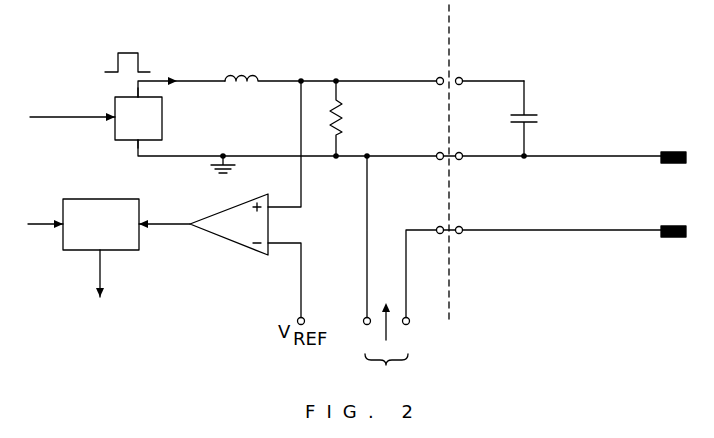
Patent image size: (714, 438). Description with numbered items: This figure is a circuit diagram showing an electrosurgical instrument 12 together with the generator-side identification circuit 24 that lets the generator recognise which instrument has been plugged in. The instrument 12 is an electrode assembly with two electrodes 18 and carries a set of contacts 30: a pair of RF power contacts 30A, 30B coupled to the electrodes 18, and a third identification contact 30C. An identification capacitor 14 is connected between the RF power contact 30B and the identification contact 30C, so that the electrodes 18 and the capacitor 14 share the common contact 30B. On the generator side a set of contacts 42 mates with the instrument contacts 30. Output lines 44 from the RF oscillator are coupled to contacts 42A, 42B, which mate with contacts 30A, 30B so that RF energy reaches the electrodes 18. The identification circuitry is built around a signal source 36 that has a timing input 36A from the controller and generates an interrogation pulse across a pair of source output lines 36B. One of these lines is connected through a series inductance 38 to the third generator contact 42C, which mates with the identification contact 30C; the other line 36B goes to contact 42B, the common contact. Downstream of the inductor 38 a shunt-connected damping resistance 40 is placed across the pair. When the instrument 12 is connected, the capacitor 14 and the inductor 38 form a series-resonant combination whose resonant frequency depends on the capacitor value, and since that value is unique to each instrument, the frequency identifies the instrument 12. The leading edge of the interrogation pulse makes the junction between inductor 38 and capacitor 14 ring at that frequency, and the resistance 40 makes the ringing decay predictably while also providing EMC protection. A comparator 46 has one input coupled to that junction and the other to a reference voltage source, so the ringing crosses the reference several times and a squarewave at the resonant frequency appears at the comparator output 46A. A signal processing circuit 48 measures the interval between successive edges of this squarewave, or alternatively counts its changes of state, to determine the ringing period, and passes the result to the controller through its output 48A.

The electrosurgical instrument 12 is at (586, 69).
The identification capacitor 14 is at (538, 119).
The electrodes 18 is at (674, 226).
The identification circuit 24 is at (211, 50).
The set of contacts 30 is at (477, 150).
The RF power contact 30A is at (461, 234).
The RF power contact 30B is at (461, 160).
The identification contact 30C is at (461, 85).
The signal source 36 is at (162, 117).
The timing input 36A is at (52, 117).
The source output lines 36B is at (138, 87).
The inductance 38 is at (238, 74).
The damping resistance 40 is at (341, 105).
The set of contacts 42 is at (422, 150).
The generator contact 42A is at (440, 234).
The generator contact 42B is at (440, 160).
The third contact 42C is at (440, 85).
The output lines 44 is at (400, 270).
The comparator 46 is at (235, 242).
The comparator output 46A is at (165, 224).
The signal processing circuit 48 is at (80, 199).
The signal processing circuit output 48A is at (100, 277).